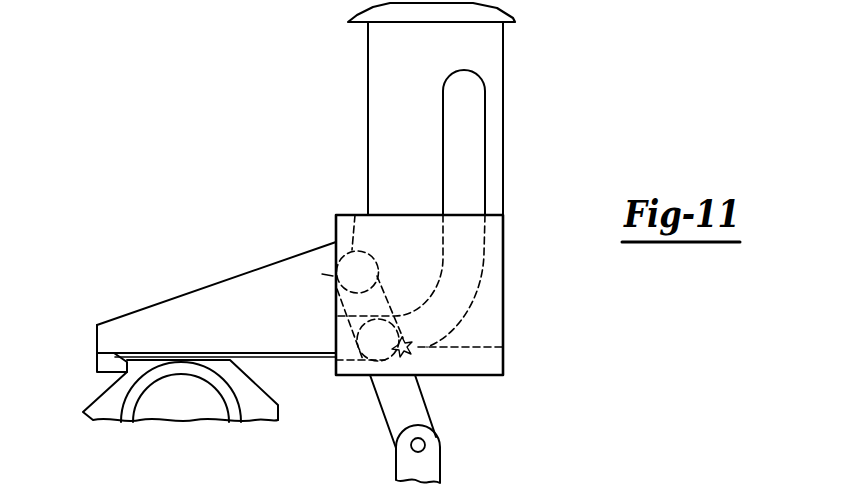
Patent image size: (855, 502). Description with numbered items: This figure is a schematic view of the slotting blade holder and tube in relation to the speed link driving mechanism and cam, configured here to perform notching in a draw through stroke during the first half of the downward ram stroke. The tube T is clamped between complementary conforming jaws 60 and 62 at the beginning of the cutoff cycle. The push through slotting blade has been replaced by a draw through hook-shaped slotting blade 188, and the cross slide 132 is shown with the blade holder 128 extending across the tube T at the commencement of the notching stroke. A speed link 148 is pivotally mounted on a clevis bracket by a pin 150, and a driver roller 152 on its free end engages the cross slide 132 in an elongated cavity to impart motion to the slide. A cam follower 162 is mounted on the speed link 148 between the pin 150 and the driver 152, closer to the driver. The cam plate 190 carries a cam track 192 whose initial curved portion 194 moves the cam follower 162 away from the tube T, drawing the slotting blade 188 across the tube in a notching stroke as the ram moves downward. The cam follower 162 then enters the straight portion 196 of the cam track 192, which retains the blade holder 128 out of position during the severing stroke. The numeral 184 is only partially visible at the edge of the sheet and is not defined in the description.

The cam plate 190 is at (503, 52).
The cam track 192 is at (486, 110).
The straight portion 196 is at (443, 134).
The cover 184 is at (716, 7).
The driver roller 152 is at (360, 208).
The cross slide 132 is at (473, 214).
The initial curved portion 194 is at (460, 316).
The cam follower 162 is at (503, 345).
The blade holder 128 is at (197, 262).
The draw through hook-shaped slotting blade 188 is at (97, 362).
The jaw 62 is at (273, 396).
The jaw 60 is at (100, 398).
The tubing T is at (148, 388).
The speed link 148 is at (426, 399).
The pin 150 is at (425, 445).